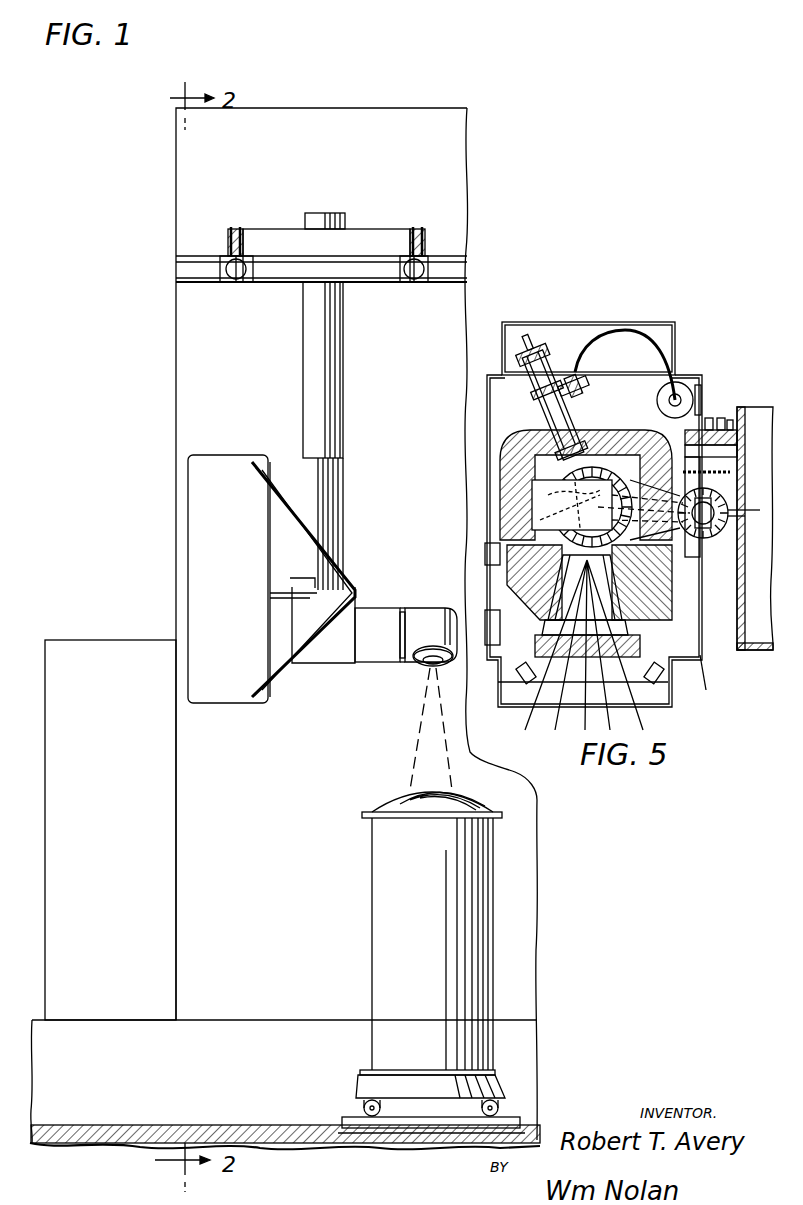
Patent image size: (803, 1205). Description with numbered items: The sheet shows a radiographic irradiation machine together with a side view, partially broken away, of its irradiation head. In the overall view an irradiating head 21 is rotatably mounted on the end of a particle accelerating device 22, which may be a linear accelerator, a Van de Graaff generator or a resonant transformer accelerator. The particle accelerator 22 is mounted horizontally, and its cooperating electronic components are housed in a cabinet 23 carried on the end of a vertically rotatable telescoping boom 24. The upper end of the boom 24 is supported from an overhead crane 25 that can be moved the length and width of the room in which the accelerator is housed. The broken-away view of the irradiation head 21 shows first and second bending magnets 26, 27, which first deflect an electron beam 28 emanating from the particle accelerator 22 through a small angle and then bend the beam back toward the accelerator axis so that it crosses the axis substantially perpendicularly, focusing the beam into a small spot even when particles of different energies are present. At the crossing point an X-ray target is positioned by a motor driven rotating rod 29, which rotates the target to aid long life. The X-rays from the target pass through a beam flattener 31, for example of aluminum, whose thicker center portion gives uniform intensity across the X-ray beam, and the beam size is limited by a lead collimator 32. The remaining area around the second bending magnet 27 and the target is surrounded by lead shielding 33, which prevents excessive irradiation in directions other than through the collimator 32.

In FIG. 1, the irradiating head 21 is at (424, 626).
In FIG. 5, the irradiating head 21 is at (680, 356).
In FIG. 1, the particle accelerating device 22 is at (378, 622).
In FIG. 5, the particle accelerating device 22 is at (757, 412).
In FIG. 1, the cabinet 23 is at (245, 712).
In FIG. 1, the telescoping boom 24 is at (328, 416).
In FIG. 1, the overhead crane 25 is at (392, 226).
In FIG. 5, the first bending magnet 26 is at (695, 527).
In FIG. 5, the second bending magnet 27 is at (606, 462).
In FIG. 5, the electron beam 28 is at (717, 620).
In FIG. 5, the motor driven rotating rod 29 is at (582, 507).
In FIG. 5, the beam flattener 31 is at (622, 598).
In FIG. 5, the collimator 32 is at (630, 626).
In FIG. 5, the lead shielding 33 is at (535, 436).